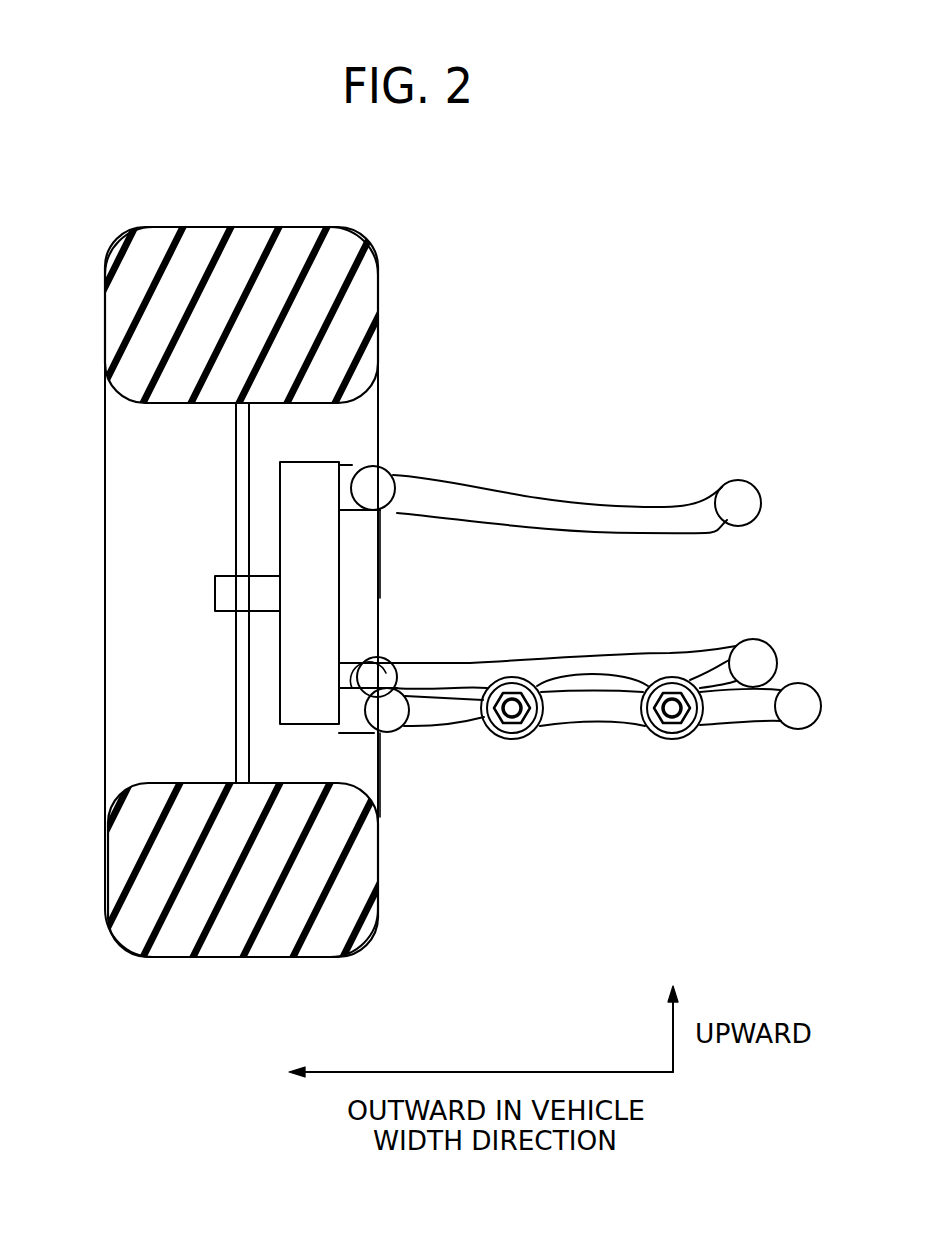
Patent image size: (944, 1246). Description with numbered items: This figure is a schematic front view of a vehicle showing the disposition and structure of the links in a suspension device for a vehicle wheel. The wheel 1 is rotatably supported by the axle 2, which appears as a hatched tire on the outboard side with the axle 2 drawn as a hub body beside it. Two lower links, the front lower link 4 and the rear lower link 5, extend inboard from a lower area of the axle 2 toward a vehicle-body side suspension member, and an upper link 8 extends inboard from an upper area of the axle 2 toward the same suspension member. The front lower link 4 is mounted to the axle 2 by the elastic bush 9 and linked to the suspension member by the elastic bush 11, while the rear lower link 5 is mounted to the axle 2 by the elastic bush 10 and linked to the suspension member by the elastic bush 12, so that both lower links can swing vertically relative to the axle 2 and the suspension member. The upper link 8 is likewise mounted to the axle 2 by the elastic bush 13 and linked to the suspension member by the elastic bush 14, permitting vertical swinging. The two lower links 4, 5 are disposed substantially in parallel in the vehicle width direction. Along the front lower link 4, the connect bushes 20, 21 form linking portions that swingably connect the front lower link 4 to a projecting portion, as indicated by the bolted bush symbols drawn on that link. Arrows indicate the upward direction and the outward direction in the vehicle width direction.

The wheel 1 is at (141, 328).
The axle 2 is at (295, 525).
The front lower link 4 is at (591, 710).
The rear lower link 5 is at (585, 663).
The upper link 8 is at (559, 518).
The elastic bush 9 is at (388, 720).
The elastic bush 10 is at (377, 680).
The elastic bush 11 is at (799, 715).
The elastic bush 12 is at (752, 656).
The elastic bush 13 is at (373, 482).
The elastic bush 14 is at (738, 496).
The connect bush 20 is at (670, 740).
The connect bush 21 is at (512, 740).